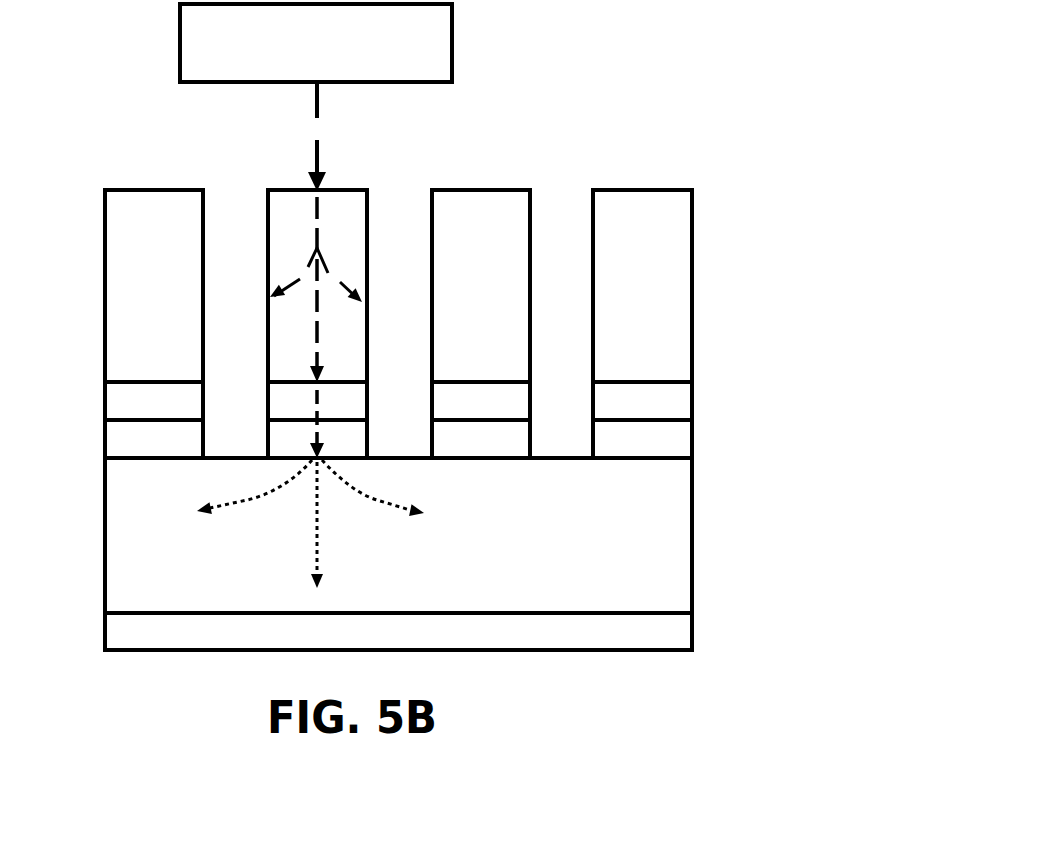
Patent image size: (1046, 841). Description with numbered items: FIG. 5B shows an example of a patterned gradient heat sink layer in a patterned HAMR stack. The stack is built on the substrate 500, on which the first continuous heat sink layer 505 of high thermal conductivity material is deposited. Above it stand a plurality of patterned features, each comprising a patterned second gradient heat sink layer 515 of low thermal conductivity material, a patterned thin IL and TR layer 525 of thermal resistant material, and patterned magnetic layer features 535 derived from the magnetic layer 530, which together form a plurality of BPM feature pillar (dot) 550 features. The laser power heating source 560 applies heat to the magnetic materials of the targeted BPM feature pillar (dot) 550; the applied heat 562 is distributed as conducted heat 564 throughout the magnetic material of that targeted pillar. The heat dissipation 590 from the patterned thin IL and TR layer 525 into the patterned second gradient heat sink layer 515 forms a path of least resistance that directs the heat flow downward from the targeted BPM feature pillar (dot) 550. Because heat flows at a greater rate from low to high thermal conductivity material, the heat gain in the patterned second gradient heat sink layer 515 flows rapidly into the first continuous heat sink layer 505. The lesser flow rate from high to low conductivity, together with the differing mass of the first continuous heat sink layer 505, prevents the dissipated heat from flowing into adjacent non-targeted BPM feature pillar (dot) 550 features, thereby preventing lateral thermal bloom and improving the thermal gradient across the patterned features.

The substrate 500 is at (673, 636).
The first continuous heat sink layer 505 is at (667, 563).
The patterned second gradient heat sink layer 515 is at (290, 452).
The patterned thin IL and TR layer 525 is at (277, 410).
The magnetic layer 530 is at (693, 247).
The patterned magnetic layer features 535 is at (282, 247).
The BPM feature pillar (dot) 550 is at (287, 192).
The laser power heating source 560 is at (180, 62).
The applied heat 562 is at (320, 143).
The conducted heat 564 is at (320, 328).
The heat dissipation 590 is at (320, 400).